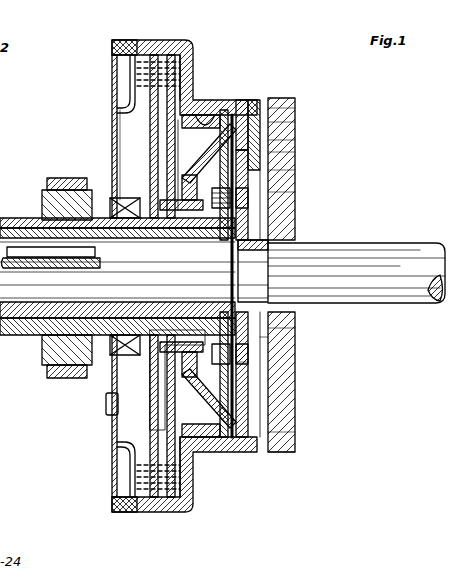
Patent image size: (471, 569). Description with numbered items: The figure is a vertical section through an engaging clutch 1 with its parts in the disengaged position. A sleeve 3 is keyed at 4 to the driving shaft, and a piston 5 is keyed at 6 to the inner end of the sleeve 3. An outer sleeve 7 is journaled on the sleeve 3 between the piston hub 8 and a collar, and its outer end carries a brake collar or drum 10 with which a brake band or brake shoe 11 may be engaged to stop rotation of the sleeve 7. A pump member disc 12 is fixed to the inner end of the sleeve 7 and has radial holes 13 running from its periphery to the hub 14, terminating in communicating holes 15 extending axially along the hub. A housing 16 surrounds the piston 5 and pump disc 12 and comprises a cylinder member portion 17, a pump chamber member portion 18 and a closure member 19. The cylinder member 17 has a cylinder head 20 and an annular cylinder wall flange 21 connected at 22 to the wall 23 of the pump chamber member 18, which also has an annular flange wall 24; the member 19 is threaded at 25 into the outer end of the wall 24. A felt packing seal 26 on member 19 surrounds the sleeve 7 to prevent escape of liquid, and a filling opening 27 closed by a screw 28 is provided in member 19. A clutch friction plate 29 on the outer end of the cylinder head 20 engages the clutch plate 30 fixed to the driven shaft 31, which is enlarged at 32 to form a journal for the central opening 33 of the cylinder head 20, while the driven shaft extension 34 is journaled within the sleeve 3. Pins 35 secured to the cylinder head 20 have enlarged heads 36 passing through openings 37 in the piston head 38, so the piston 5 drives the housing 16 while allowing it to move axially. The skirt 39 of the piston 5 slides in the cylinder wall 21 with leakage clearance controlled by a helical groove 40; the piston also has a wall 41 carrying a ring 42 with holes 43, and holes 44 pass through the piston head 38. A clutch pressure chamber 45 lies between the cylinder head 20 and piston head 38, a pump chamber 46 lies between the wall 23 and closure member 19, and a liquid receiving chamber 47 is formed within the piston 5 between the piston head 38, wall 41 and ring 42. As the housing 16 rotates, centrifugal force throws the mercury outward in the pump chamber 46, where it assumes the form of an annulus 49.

The engaging clutch 1 is at (370, 426).
The sleeve 3 is at (232, 82).
The key 4 is at (162, 72).
The piston 5 is at (237, 455).
The key 6 is at (210, 240).
The outer sleeve 7 is at (52, 225).
The piston hub 8 is at (186, 240).
The brake collar or drum 10 is at (50, 350).
The brake band or brake shoe 11 is at (58, 378).
The pump member disc 12 is at (133, 88).
The radial holes 13 is at (152, 145).
The hub 14 is at (164, 215).
The communicating holes 15 is at (172, 215).
The housing 16 is at (178, 46).
The cylinder member portion 17 is at (247, 100).
The pump chamber member portion 18 is at (195, 54).
The closure member 19 is at (117, 160).
The cylinder head 20 is at (252, 362).
The annular cylinder wall flange 21 is at (238, 458).
The connection 22 is at (232, 462).
The wall 23 is at (196, 494).
The annular flange wall 24 is at (119, 42).
The threads 25 is at (128, 510).
The packing seal 26 is at (114, 352).
The filling opening 27 is at (113, 430).
The screw 28 is at (108, 405).
The clutch friction plate 29 is at (276, 418).
The clutch plate 30 is at (289, 453).
The driven shaft 31 is at (400, 302).
The enlargement 32 is at (258, 273).
The central opening 33 is at (296, 330).
The driven shaft extension 34 is at (130, 244).
The pins 35 is at (296, 216).
The enlarged heads 36 is at (296, 193).
The openings 37 is at (296, 172).
The piston head 38 is at (296, 157).
The skirt 39 is at (296, 126).
The helical groove 40 is at (296, 112).
The wall 41 is at (290, 392).
The ring 42 is at (296, 362).
The holes 43 is at (272, 384).
The holes 44 is at (296, 146).
The clutch pressure chamber 45 is at (296, 432).
The pump chamber 46 is at (140, 117).
The liquid receiving chamber 47 is at (296, 337).
The mercury annulus 49 is at (133, 460).